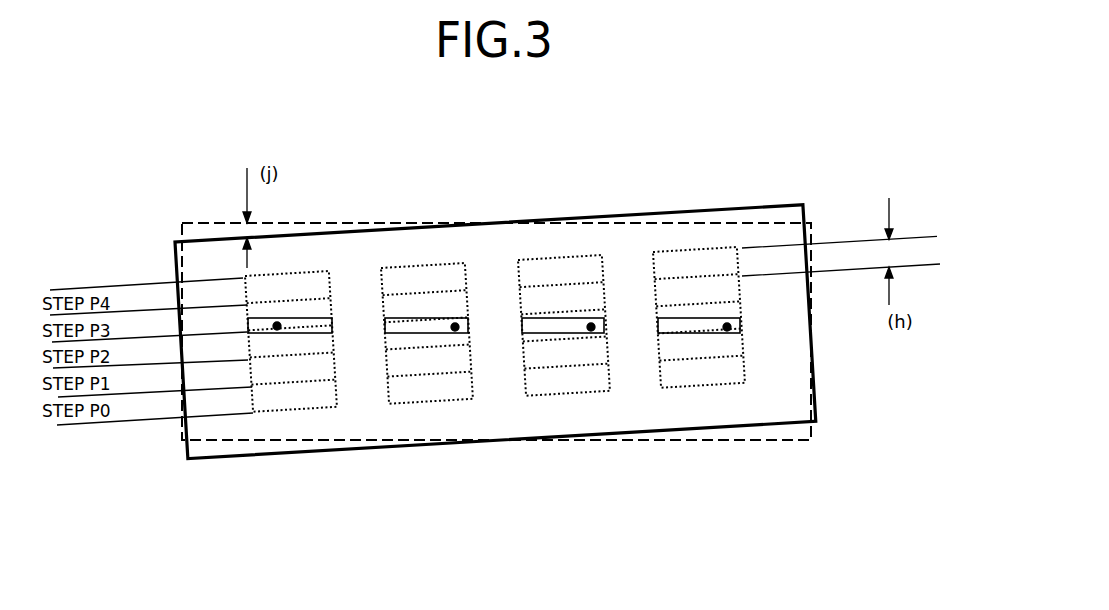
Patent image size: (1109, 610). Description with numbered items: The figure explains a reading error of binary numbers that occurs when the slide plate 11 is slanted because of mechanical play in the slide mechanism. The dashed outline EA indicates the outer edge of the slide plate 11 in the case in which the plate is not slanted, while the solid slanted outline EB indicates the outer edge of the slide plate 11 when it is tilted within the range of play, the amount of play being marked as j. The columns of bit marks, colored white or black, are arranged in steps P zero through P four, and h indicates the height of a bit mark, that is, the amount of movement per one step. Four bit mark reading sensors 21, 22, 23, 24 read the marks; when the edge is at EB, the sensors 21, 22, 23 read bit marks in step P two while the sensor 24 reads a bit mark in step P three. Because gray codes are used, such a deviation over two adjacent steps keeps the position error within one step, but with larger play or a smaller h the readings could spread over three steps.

The slide plate 11 is at (415, 250).
The bit mark reading sensor 21 is at (727, 327).
The bit mark reading sensor 22 is at (591, 327).
The bit mark reading sensor 23 is at (455, 327).
The bit mark reading sensor 24 is at (277, 326).
The outer edge of the slide plate when not slanted EA is at (770, 440).
The outer edge of the slide plate when slanted EB is at (495, 304).